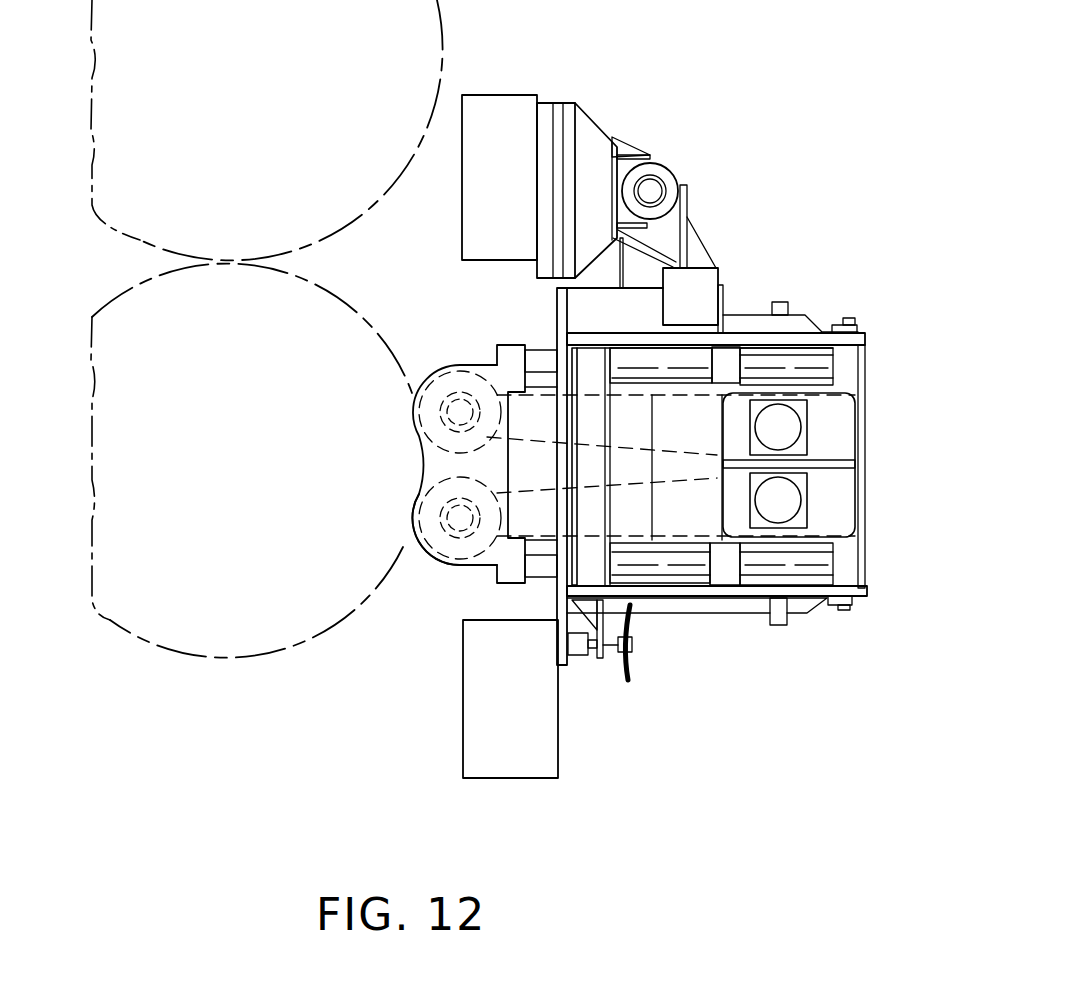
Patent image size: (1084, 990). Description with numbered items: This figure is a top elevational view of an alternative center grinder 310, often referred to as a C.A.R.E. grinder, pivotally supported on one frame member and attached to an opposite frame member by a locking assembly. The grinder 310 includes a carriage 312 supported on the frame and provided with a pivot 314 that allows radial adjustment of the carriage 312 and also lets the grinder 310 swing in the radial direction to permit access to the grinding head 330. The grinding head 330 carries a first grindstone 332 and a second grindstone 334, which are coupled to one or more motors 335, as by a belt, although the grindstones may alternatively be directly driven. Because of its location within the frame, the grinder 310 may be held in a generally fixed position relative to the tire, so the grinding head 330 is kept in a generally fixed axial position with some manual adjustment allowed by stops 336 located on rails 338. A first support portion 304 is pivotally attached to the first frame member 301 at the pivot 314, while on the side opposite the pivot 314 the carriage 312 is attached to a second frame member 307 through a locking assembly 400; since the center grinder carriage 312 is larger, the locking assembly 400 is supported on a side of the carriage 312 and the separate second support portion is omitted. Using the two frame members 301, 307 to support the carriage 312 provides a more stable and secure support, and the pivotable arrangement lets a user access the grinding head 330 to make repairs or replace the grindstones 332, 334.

The first frame member 301 is at (487, 104).
The first support portion 304 is at (692, 252).
The second frame member 307 is at (475, 735).
The grinder 310 is at (440, 566).
The carriage 312 is at (693, 607).
The pivot 314 is at (662, 170).
The grinding head 330 is at (466, 360).
The first grindstone 332 is at (430, 385).
The second grindstone 334 is at (428, 548).
The motor 335 is at (790, 500).
The stops 336 is at (727, 573).
The rails 338 is at (795, 560).
The locking assembly 400 is at (595, 664).